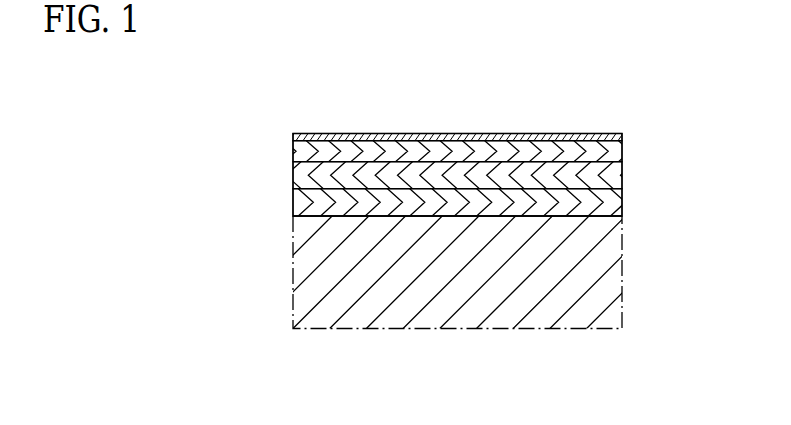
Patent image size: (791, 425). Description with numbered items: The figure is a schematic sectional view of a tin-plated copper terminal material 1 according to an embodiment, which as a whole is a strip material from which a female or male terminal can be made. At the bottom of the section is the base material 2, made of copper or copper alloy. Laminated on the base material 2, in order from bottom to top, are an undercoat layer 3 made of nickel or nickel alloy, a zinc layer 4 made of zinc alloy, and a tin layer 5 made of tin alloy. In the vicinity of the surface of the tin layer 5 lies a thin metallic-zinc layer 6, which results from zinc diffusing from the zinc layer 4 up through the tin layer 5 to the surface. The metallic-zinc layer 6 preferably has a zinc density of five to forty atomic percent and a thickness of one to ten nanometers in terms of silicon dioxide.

The tin-plated copper terminal material 1 is at (594, 130).
The base material 2 is at (539, 322).
The undercoat layer 3 is at (612, 200).
The zinc layer 4 is at (610, 175).
The tin layer 5 is at (610, 150).
The metallic-zinc layer 6 is at (423, 133).